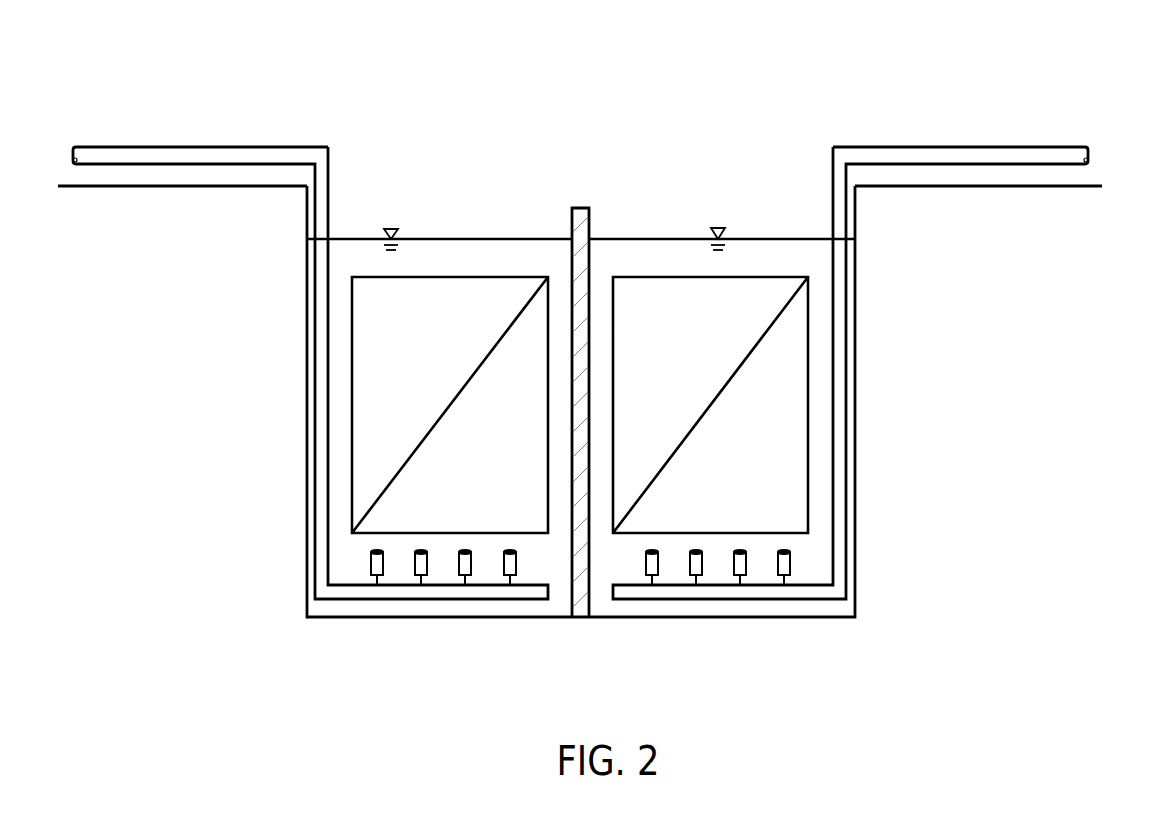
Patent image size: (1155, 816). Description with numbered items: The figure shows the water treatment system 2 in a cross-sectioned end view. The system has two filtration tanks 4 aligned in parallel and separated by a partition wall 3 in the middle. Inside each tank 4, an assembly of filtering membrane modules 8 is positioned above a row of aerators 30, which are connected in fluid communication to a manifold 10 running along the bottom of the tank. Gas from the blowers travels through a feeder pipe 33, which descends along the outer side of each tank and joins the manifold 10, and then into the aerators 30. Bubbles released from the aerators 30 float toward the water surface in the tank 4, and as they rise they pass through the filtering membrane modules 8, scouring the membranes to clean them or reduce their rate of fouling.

The water treatment system 2 is at (287, 64).
The partition wall 3 is at (580, 208).
The filtration tank 4 is at (433, 194).
The filtering membrane module 8 is at (352, 378).
The manifold 10 is at (437, 600).
The aerator 30 is at (371, 562).
The feeder pipe 33 is at (312, 447).